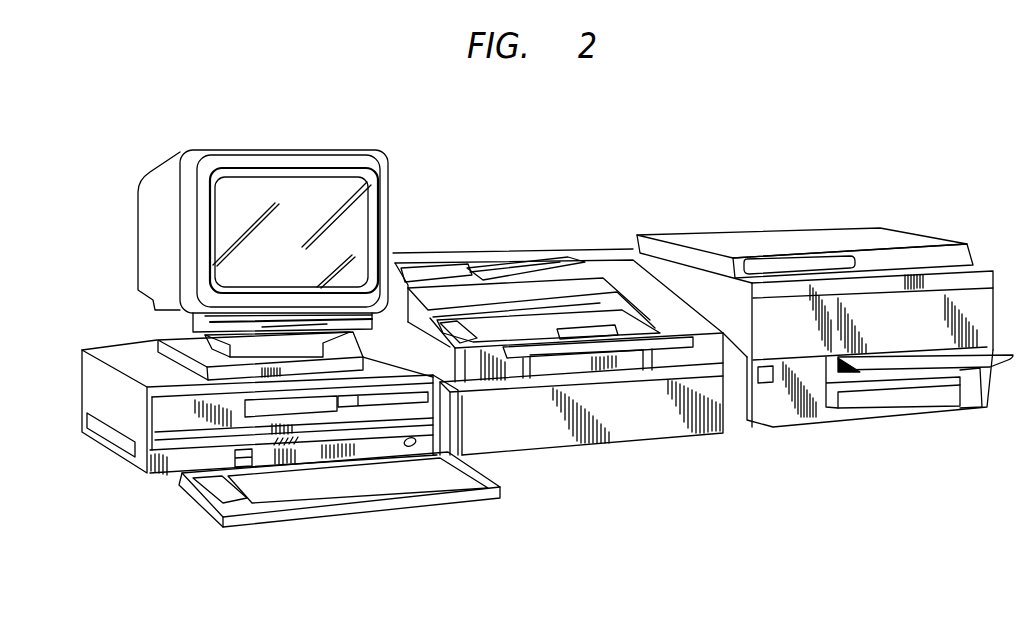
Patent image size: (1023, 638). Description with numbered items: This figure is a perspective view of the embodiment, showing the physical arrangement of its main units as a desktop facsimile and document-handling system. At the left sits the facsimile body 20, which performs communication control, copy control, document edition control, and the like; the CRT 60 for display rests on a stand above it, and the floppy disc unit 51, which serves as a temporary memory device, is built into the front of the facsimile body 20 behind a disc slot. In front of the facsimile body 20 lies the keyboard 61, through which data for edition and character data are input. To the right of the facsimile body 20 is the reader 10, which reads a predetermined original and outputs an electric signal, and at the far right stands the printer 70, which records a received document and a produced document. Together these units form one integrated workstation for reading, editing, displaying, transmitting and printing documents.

The reader 10 is at (528, 265).
The facsimile body 20 is at (117, 458).
The floppy disc unit 51 is at (402, 404).
The CRT 60 is at (325, 150).
The keyboard 61 is at (362, 515).
The printer 70 is at (833, 228).